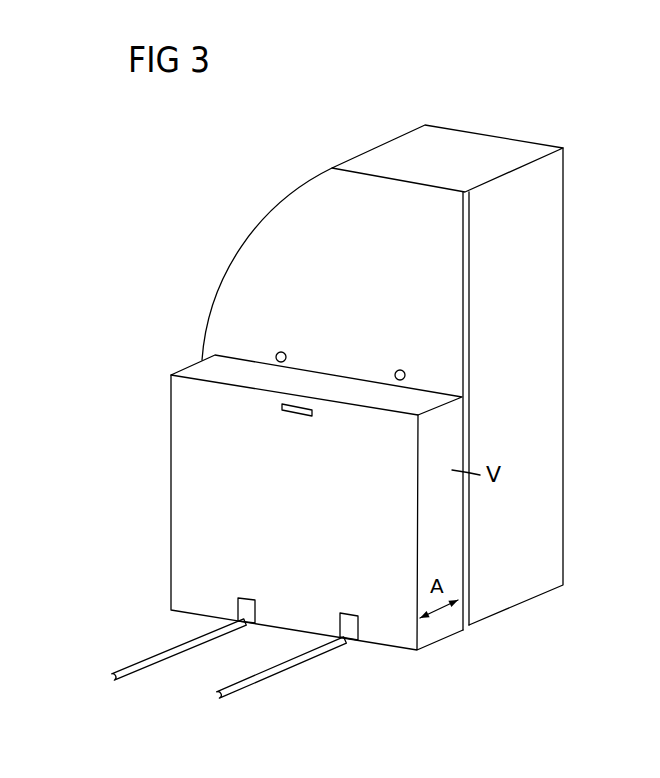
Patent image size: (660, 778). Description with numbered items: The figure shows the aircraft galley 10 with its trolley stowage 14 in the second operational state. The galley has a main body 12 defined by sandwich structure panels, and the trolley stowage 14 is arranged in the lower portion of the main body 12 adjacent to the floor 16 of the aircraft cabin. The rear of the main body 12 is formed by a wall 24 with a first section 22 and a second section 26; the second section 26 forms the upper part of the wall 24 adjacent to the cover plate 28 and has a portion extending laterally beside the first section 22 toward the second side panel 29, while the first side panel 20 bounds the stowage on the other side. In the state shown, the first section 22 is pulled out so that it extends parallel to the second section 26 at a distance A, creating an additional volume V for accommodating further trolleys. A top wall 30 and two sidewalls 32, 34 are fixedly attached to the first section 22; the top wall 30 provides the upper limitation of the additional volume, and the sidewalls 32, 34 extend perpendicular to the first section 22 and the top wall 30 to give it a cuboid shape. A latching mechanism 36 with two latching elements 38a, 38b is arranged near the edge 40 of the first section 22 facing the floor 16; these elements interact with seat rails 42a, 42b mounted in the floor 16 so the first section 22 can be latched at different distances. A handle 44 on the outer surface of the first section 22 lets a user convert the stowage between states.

The aircraft galley 10 is at (573, 122).
The main body 12 is at (440, 145).
The trolley stowage 14 is at (536, 437).
The floor 16 is at (473, 670).
The first side panel 20 is at (553, 245).
The first section 22 is at (182, 438).
The wall 24 is at (302, 203).
The second section 26 is at (223, 327).
The cover plate 28 is at (495, 143).
The second side panel 29 is at (234, 276).
The top wall 30 is at (327, 384).
The sidewall 32 is at (452, 518).
The sidewall 34 is at (170, 538).
The latching mechanism 36 is at (333, 590).
The latching element 38a is at (257, 603).
The latching element 38b is at (358, 623).
The edge 40 is at (188, 613).
The seat rail 42a is at (145, 667).
The seat rail 42b is at (257, 680).
The handle 44 is at (297, 419).